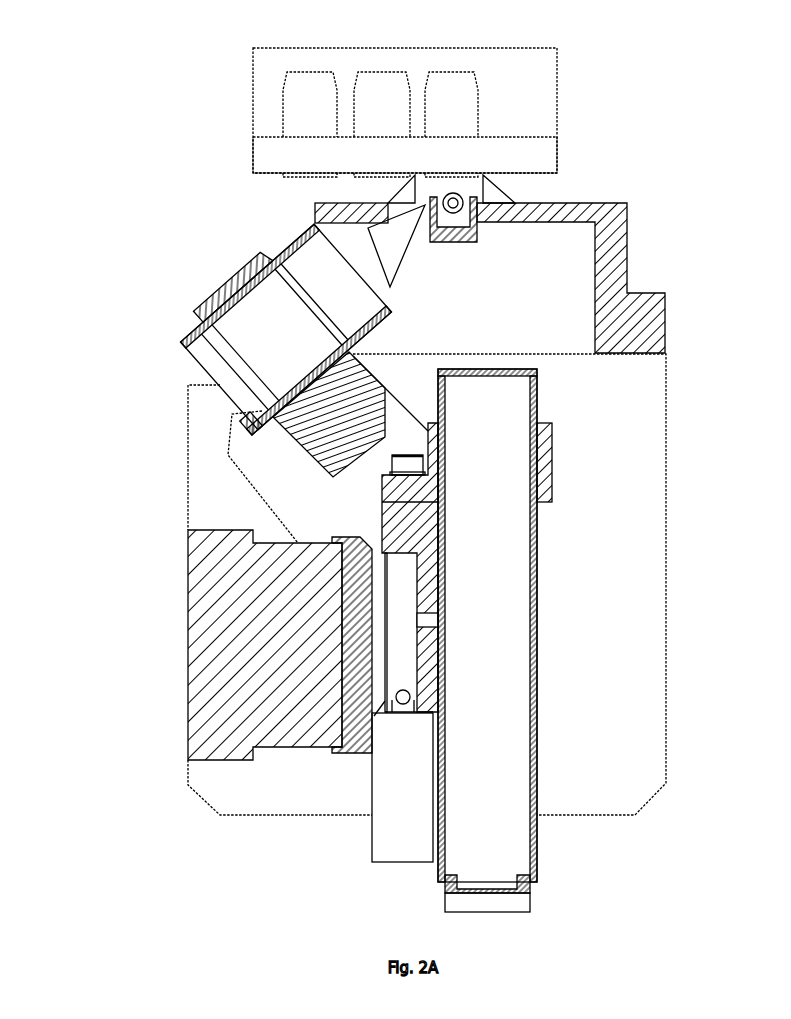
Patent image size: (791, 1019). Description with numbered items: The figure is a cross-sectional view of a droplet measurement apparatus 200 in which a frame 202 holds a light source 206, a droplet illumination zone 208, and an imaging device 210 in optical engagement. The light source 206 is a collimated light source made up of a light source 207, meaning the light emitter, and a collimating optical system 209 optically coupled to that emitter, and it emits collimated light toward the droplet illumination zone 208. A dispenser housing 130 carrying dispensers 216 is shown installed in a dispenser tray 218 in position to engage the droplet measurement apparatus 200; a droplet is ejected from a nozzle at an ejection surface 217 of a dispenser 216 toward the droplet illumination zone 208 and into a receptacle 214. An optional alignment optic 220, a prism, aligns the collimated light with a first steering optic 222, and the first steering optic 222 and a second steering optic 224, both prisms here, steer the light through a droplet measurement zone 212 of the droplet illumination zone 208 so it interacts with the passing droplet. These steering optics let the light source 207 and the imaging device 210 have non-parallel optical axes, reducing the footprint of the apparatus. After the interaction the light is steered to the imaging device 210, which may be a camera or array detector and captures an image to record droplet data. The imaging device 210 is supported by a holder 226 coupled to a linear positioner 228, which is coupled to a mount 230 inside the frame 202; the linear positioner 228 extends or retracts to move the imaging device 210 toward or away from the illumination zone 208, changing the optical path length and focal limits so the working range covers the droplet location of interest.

The dispenser housing 130 is at (371, 100).
The dispensers 216 is at (488, 86).
The dispenser tray 218 is at (262, 136).
The ejection surface 217 is at (430, 174).
The droplet measurement zone 212 is at (463, 188).
The first steering optic 222 is at (400, 190).
The second steering optic 224 is at (498, 185).
The droplet illumination zone 208 is at (527, 196).
The receptacle 214 is at (478, 235).
The alignment optic 220 is at (398, 268).
The light source 206 is at (286, 347).
The collimating optical system 209 is at (386, 305).
The light source 207 is at (195, 371).
The frame 202 is at (176, 438).
The droplet measurement apparatus 200 is at (359, 510).
The imaging device 210 is at (540, 395).
The holder 226 is at (553, 463).
The mount 230 is at (287, 748).
The linear positioner 228 is at (372, 855).